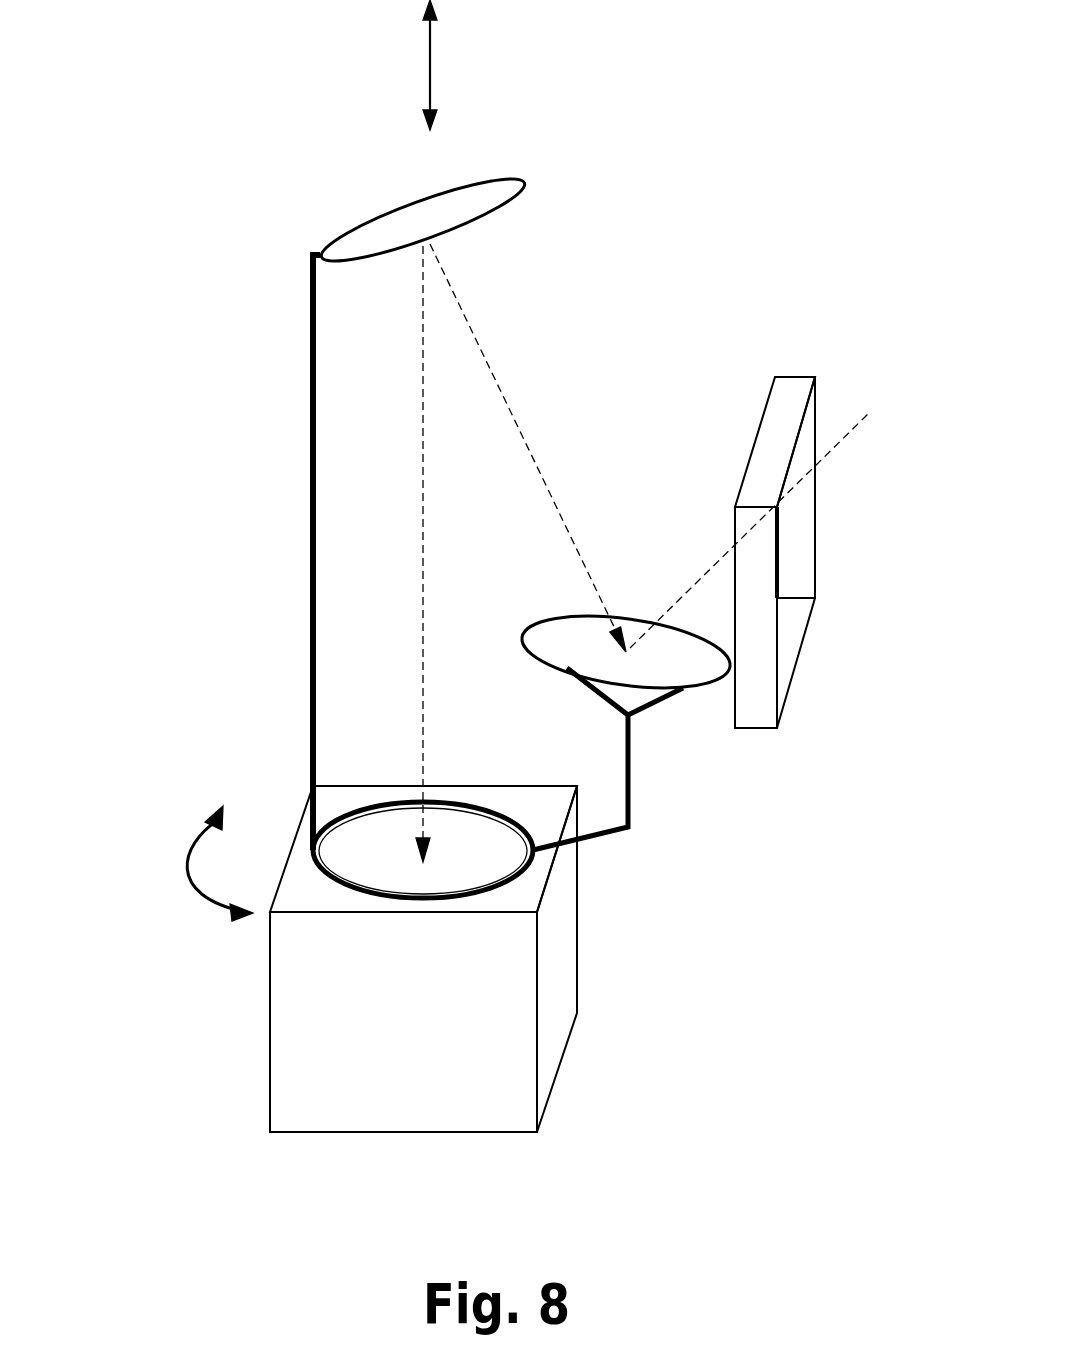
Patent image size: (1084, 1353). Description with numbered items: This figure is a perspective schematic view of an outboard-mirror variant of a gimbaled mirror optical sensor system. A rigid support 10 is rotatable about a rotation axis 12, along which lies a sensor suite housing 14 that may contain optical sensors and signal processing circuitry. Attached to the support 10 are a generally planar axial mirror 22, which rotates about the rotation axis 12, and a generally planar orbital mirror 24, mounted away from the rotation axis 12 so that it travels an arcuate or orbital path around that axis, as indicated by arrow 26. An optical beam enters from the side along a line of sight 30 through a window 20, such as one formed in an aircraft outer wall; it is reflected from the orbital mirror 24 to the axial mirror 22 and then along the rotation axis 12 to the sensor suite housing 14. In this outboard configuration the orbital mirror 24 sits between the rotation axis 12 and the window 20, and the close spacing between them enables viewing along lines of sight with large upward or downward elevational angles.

The rigid support 10 is at (246, 552).
The rotation axis 12 is at (508, 65).
The sensor suite housing 14 is at (485, 959).
The window 20 is at (831, 520).
The axial mirror 22 is at (508, 189).
The orbital mirror 24 is at (625, 659).
The arrow 26 is at (155, 893).
The line of sight 30 is at (785, 530).